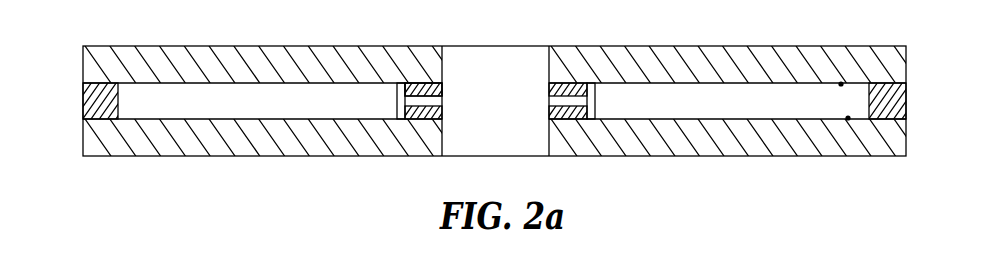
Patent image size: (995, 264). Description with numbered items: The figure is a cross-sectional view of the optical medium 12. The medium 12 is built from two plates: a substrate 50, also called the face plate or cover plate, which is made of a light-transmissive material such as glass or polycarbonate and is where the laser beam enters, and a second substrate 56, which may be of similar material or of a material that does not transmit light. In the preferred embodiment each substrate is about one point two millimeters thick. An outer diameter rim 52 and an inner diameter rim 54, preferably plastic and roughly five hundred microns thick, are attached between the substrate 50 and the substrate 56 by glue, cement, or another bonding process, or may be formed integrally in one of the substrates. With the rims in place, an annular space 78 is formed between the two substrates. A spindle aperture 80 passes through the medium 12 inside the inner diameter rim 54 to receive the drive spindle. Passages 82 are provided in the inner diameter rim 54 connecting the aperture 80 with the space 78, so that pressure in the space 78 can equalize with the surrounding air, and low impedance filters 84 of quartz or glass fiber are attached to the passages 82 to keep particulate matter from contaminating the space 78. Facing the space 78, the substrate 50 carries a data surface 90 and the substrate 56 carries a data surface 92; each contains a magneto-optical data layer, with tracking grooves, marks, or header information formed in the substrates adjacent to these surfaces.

The medium 12 is at (172, 173).
The substrate 50 is at (83, 144).
The outer diameter rim 52 is at (83, 102).
The inner diameter rim 54 is at (442, 90).
The substrate 56 is at (83, 62).
The annular space 78 is at (258, 114).
The spindle aperture 80 is at (549, 143).
The passages 82 is at (408, 101).
The low impedance filters 84 is at (397, 101).
The data surface 90 is at (848, 118).
The data surface 92 is at (841, 84).